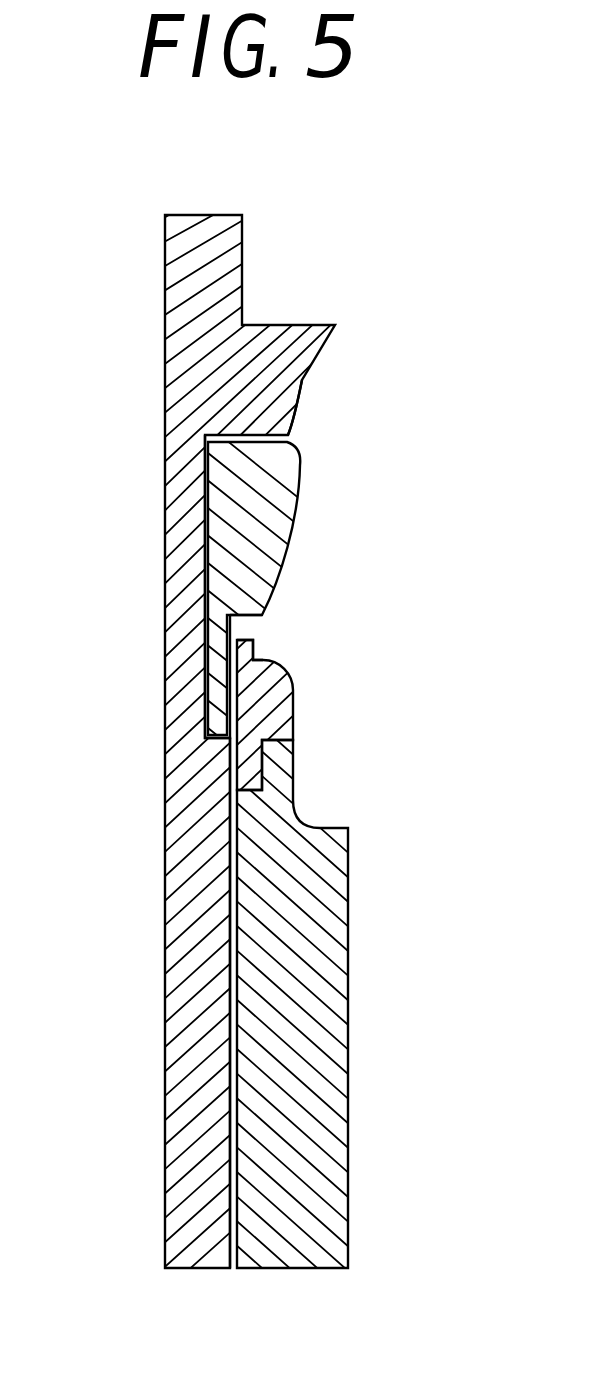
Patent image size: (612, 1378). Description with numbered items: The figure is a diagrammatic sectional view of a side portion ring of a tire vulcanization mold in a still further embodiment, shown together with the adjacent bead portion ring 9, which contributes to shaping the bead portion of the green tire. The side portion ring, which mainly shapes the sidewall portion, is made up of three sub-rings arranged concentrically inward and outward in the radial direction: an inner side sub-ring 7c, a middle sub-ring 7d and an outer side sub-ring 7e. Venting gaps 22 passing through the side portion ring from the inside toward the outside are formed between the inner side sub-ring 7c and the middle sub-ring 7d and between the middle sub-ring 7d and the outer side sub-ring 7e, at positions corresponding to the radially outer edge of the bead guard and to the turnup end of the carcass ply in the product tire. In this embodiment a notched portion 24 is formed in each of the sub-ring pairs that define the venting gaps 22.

The outer side sub-ring 7e is at (217, 400).
The middle sub-ring 7d is at (237, 553).
The inner side sub-ring 7c is at (247, 753).
The venting gaps 22 is at (240, 437).
The notched portion 24 is at (303, 438).
The bead portion ring 9 is at (303, 1008).